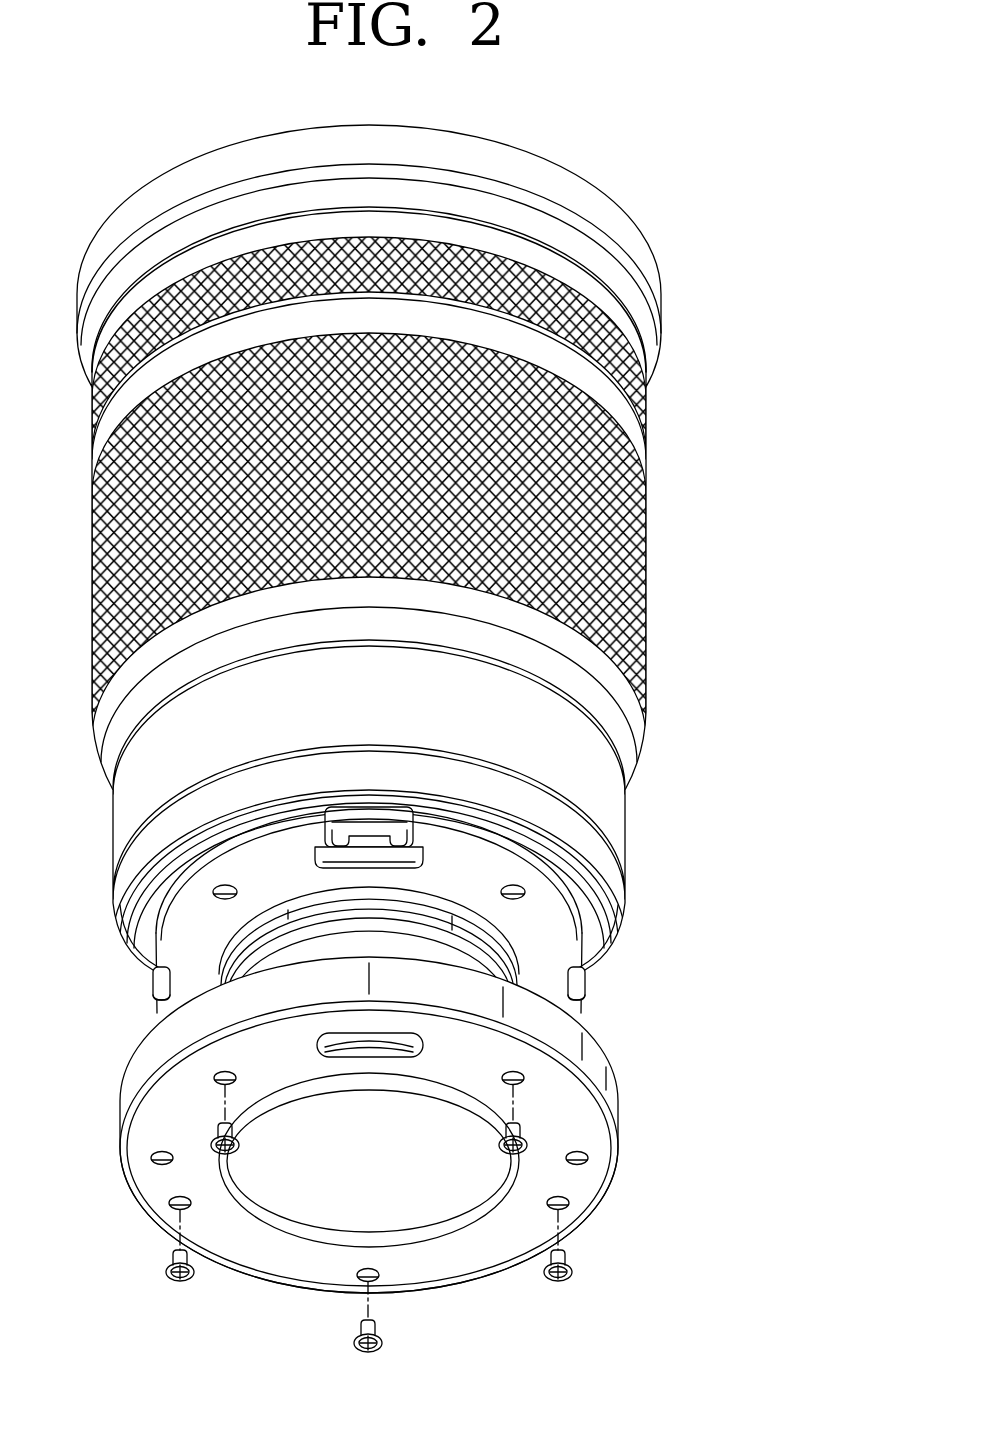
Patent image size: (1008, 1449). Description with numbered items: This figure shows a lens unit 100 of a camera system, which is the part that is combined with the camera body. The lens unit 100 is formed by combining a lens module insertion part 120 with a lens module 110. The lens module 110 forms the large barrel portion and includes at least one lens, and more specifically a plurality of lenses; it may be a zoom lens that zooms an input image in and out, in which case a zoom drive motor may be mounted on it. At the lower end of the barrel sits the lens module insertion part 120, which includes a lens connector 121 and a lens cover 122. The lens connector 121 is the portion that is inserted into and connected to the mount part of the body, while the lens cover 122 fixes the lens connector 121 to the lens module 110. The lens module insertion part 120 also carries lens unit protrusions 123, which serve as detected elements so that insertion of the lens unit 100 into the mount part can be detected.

The lens unit 100 is at (467, 724).
The lens module 110 is at (633, 543).
The lens module insertion part 120 is at (480, 1080).
The lens connector 121 is at (565, 950).
The lens cover 122 is at (762, 949).
The lens unit protrusions 123 is at (583, 985).